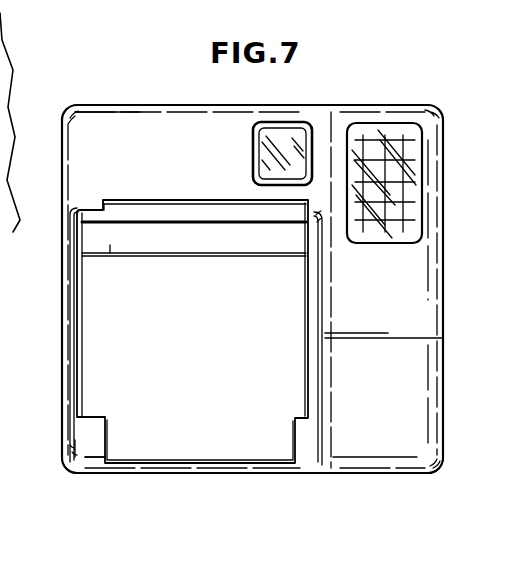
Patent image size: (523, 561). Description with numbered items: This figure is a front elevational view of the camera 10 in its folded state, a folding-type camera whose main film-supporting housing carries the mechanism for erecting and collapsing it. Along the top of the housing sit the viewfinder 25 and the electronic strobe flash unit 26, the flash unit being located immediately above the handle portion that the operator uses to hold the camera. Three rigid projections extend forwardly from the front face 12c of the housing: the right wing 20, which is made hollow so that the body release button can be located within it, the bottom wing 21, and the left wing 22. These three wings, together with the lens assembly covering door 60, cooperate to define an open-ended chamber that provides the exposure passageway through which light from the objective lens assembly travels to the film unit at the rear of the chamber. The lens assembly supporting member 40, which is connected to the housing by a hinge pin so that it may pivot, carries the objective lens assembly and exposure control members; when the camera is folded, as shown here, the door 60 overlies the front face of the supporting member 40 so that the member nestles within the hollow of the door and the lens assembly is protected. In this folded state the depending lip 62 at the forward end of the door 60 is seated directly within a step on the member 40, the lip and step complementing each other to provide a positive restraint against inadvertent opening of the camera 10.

The camera 10 is at (404, 104).
The front face of the housing 12c is at (104, 130).
The right wing 20 is at (70, 395).
The bottom wing 21 is at (97, 465).
The left wing 22 is at (332, 382).
The viewfinder 25 is at (288, 138).
The electronic strobe flash unit 26 is at (393, 128).
The lens assembly supporting member 40 is at (184, 351).
The lens assembly covering door 60 is at (181, 221).
The depending lip 62 is at (107, 255).